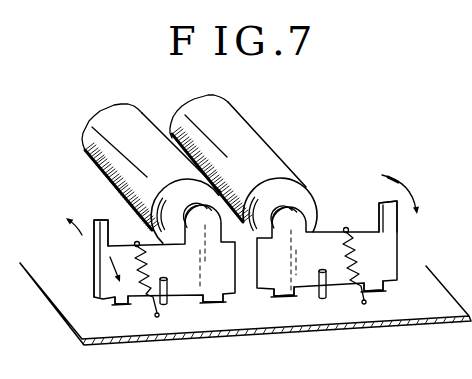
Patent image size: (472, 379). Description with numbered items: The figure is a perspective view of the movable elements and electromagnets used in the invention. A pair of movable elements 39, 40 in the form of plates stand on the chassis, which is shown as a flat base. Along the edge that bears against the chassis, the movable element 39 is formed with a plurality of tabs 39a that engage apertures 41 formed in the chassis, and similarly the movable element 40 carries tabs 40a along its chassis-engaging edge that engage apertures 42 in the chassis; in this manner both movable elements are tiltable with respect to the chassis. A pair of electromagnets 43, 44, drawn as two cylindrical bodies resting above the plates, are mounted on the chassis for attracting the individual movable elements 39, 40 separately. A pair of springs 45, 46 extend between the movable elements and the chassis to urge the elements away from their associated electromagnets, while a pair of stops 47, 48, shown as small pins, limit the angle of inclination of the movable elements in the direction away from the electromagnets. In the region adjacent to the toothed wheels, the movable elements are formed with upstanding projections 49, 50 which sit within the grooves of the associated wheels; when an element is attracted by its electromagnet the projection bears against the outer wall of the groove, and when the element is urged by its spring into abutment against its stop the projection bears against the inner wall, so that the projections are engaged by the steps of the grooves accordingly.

The movable element 39 is at (392, 232).
The tabs 39a is at (290, 295).
The movable element 40 is at (105, 281).
The tabs 40a is at (126, 304).
The apertures 41 is at (270, 297).
The apertures 42 is at (118, 302).
The electromagnet 43 is at (237, 112).
The electromagnet 44 is at (97, 127).
The spring 45 is at (357, 262).
The spring 46 is at (130, 244).
The stop 47 is at (325, 270).
The stop 48 is at (166, 305).
The projection 49 is at (381, 204).
The projection 50 is at (100, 237).